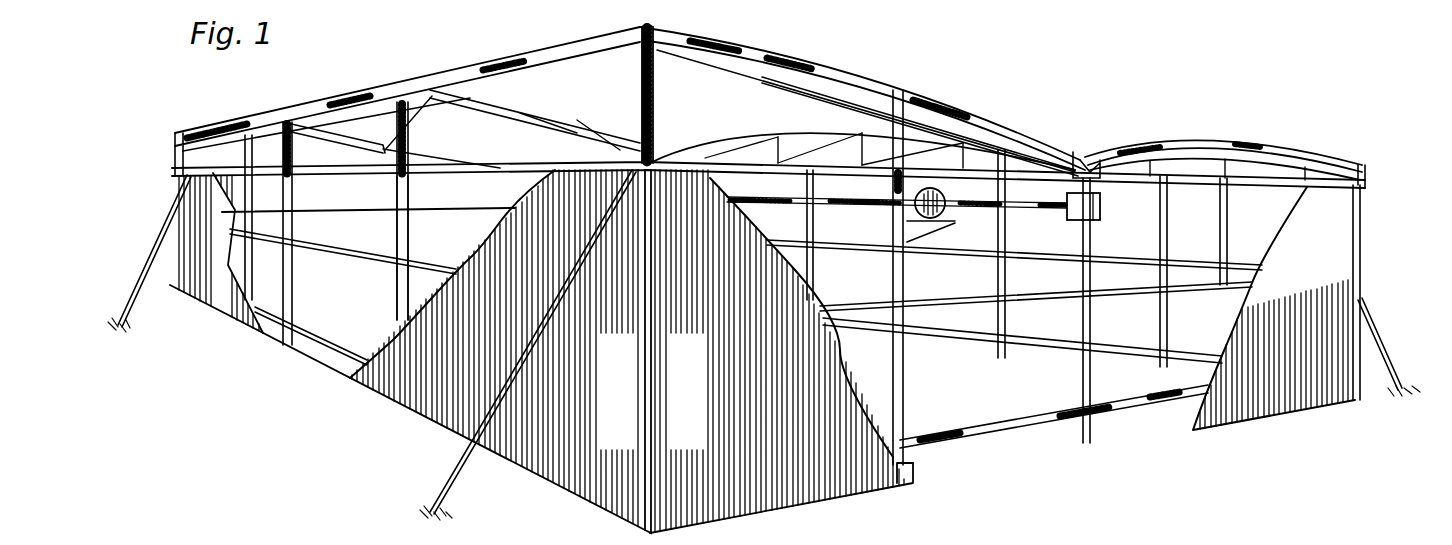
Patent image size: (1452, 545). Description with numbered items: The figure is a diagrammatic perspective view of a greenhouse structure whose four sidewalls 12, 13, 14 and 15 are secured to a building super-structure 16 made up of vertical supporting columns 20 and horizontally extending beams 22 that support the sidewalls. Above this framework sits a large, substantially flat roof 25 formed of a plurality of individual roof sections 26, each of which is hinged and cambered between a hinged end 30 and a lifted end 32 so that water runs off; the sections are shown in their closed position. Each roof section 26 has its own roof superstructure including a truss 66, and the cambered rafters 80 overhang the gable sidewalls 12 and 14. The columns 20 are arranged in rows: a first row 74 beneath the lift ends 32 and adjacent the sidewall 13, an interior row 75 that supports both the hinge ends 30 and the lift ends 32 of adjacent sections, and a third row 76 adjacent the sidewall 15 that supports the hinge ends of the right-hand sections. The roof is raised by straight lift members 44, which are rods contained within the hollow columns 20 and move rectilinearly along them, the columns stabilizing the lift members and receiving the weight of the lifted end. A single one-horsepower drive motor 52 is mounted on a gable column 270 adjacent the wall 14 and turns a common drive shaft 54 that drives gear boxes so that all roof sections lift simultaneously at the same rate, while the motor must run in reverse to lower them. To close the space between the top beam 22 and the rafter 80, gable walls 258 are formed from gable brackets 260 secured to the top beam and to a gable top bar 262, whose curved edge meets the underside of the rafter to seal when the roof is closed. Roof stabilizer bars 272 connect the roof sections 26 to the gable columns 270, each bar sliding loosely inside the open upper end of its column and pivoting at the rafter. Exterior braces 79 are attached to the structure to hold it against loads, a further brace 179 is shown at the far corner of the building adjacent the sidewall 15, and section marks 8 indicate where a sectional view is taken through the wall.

The section line 8- 8 is at (697, 390).
The sidewall 12 is at (237, 190).
The sidewall 13 is at (430, 390).
The sidewall 14 is at (830, 470).
The sidewall 15 is at (1277, 200).
The building super-structure 16 is at (980, 443).
The vertical supporting column 20 is at (296, 235).
The horizontally extending beam 22 is at (306, 173).
The roof 25 is at (973, 90).
The roof section 26 is at (1243, 100).
The hinged end 30 is at (1073, 150).
The lifted end 32 is at (585, 12).
The lift member 44 is at (178, 150).
The drive motor 52 is at (953, 227).
The drive shaft 54 is at (867, 203).
The truss 66 is at (377, 120).
The first row of columns 74 is at (385, 323).
The interior row of columns 75 is at (1103, 430).
The third row of columns 76 is at (1170, 313).
The exterior brace 79 is at (138, 278).
The cambered rafter 80 is at (327, 118).
The brace 179 is at (1373, 313).
The gable wall 258 is at (742, 157).
The gable bracket 260 is at (782, 143).
The gable top bar 262 is at (700, 150).
The gable column 270 is at (905, 382).
The roof stabilizer bar 272 is at (917, 97).